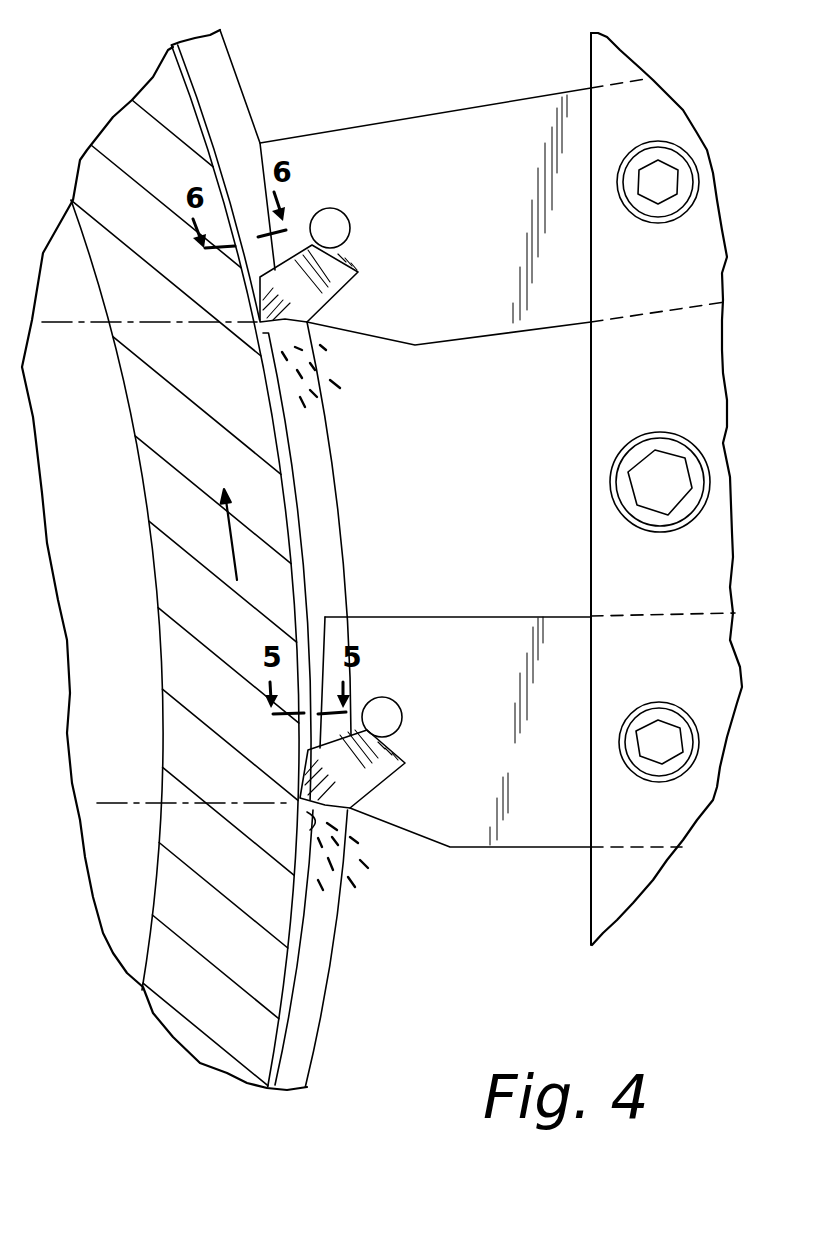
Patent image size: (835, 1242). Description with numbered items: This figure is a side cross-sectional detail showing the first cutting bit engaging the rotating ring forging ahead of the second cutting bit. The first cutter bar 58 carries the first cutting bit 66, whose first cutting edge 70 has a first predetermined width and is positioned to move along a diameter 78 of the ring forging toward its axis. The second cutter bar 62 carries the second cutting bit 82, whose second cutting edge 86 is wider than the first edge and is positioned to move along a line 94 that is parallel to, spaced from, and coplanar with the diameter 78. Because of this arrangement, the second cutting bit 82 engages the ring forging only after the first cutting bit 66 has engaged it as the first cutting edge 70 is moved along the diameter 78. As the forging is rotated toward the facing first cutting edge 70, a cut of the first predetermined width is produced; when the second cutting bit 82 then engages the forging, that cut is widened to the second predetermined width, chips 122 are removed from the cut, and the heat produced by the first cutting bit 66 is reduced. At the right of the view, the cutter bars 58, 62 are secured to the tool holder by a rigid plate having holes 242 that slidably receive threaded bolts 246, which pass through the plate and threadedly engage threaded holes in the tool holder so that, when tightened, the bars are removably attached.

The first cutter bar 58 is at (547, 813).
The second cutter bar 62 is at (531, 283).
The first cutting bit 66 is at (372, 770).
The first cutting edge 70 is at (308, 810).
The diameter 78 is at (112, 805).
The second cutting bit 82 is at (335, 278).
The second cutting edge 86 is at (263, 333).
The line 94 is at (55, 325).
The chips 122 is at (307, 370).
The holes 242 is at (627, 538).
The threaded bolts 246 is at (620, 482).